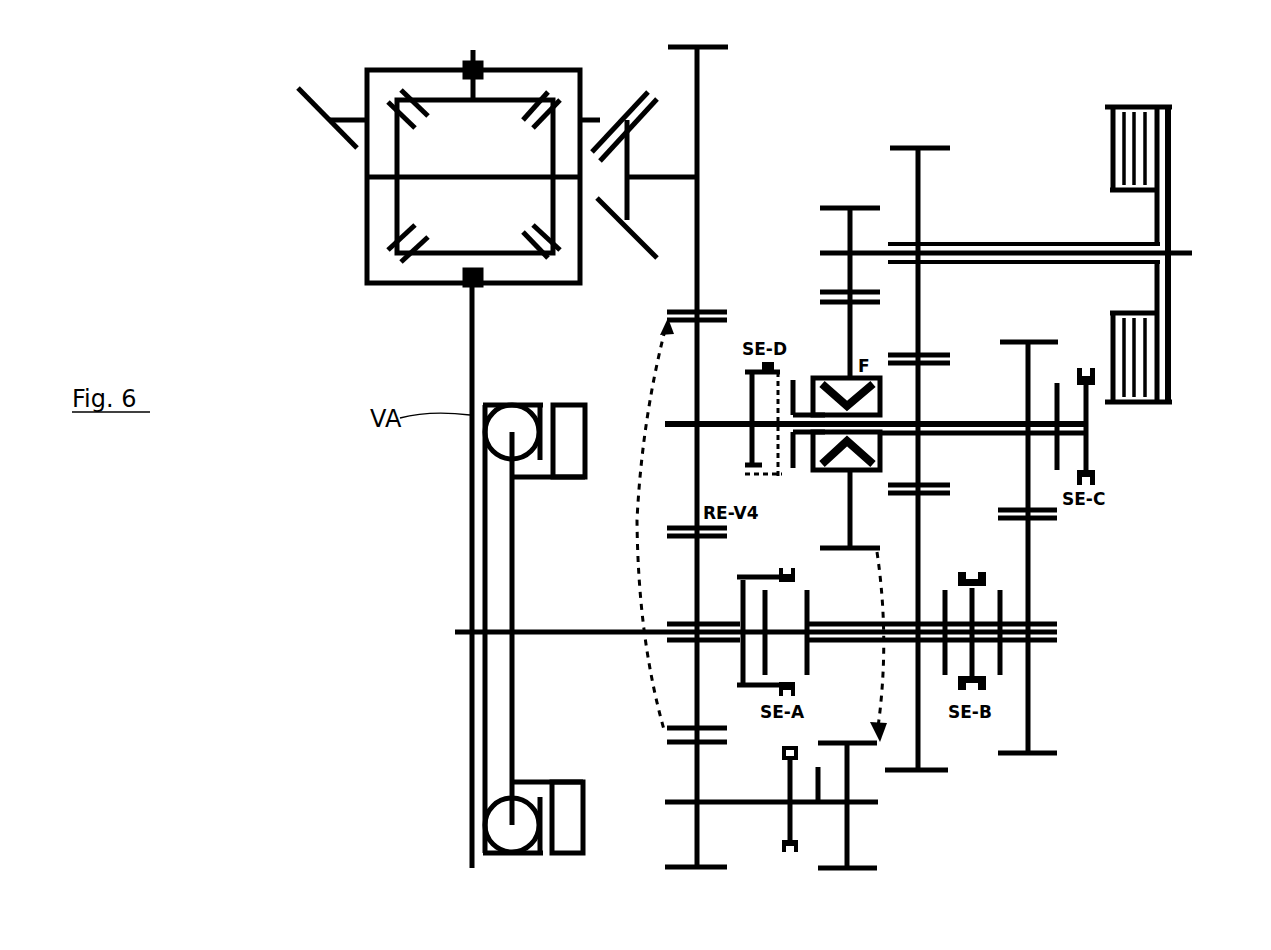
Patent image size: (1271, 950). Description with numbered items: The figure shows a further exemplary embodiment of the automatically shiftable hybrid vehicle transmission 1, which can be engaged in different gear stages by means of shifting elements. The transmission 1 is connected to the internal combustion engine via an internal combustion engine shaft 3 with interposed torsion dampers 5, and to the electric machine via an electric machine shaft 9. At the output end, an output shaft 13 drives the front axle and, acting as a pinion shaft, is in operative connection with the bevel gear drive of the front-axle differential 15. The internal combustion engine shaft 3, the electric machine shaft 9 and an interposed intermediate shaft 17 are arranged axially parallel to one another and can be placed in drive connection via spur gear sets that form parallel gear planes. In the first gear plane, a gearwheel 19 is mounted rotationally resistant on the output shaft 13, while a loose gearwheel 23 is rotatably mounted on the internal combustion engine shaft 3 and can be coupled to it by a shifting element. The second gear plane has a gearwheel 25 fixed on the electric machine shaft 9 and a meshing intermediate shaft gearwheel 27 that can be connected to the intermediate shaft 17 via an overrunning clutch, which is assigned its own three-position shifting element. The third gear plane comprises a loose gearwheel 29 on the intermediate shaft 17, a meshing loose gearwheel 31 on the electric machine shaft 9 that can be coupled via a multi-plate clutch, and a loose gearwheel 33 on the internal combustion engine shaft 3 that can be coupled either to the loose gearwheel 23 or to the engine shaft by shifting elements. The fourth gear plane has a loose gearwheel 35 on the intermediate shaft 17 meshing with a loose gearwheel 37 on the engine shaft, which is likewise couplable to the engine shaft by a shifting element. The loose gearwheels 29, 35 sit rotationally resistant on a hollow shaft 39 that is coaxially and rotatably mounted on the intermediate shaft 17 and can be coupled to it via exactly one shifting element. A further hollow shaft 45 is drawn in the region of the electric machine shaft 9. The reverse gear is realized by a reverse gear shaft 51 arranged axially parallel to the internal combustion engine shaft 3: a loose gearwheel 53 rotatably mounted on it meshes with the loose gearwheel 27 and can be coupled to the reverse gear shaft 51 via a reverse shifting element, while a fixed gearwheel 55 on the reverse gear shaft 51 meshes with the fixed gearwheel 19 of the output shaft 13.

The vehicle transmission 1 is at (1063, 878).
The internal combustion engine shaft 3 is at (568, 628).
The torsion dampers 5 is at (515, 855).
The electric machine shaft 9 is at (1180, 250).
The output shaft 13 is at (705, 175).
The front-axle differential 15 is at (556, 70).
The intermediate shaft 17 is at (677, 420).
The gearwheel 19 is at (700, 68).
The loose gearwheel 23 is at (690, 686).
The gearwheel 25 is at (845, 220).
The intermediate shaft gearwheel 27 is at (846, 320).
The loose gearwheel 29 is at (923, 386).
The loose gearwheel 31 is at (925, 170).
The loose gearwheel 33 is at (922, 522).
The loose gearwheel 35 is at (1030, 340).
The loose gearwheel 37 is at (1032, 595).
The hollow shaft 39 is at (982, 437).
The hollow shaft 45 is at (1022, 240).
The reverse gear shaft 51 is at (670, 808).
The loose gearwheel 53 is at (858, 870).
The fixed gearwheel 55 is at (705, 870).